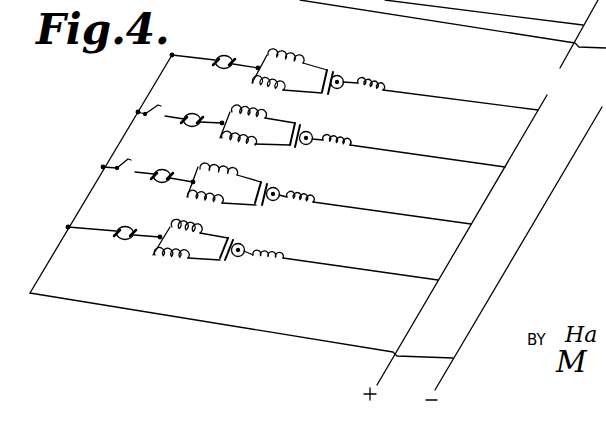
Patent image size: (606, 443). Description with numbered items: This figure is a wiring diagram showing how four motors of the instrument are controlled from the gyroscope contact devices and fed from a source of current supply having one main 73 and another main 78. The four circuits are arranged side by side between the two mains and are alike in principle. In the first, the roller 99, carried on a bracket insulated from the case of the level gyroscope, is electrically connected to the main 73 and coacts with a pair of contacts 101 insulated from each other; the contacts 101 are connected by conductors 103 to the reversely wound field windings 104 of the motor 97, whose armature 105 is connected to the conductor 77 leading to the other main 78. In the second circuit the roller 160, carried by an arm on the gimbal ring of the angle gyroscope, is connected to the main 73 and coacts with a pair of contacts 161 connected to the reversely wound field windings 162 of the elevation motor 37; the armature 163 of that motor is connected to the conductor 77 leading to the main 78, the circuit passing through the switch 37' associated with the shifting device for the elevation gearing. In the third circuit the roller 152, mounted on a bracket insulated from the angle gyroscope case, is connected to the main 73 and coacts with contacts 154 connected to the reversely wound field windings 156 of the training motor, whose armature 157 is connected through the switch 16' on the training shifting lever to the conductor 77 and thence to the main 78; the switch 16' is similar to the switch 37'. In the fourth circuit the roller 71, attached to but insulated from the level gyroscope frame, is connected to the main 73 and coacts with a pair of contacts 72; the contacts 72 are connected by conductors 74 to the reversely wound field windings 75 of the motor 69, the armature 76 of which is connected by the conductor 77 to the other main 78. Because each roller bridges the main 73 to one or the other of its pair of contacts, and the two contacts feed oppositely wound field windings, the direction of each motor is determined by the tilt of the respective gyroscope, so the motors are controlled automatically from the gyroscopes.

The armature 105 is at (227, 55).
The motor 97 is at (256, 63).
The conductors 103 is at (289, 74).
The field windings 104 is at (284, 52).
The contacts 101 is at (332, 71).
The roller 99 is at (345, 79).
The switch 37' is at (161, 97).
The armature 163 is at (193, 113).
The motor 37 is at (214, 105).
The field windings 162 is at (257, 125).
The contacts 161 is at (301, 125).
The roller 160 is at (313, 135).
The switch 16' is at (133, 153).
The armature 157 is at (165, 169).
The field windings 156 is at (224, 184).
The contacts 154 is at (268, 185).
The roller 152 is at (281, 192).
The armature 76 is at (119, 240).
The motor 69 is at (158, 234).
The field windings 75 is at (190, 243).
The conductors 74 is at (199, 235).
The contacts 72 is at (235, 241).
The roller 71 is at (247, 250).
The main 73 is at (490, 190).
The main 78 is at (531, 230).
The conductor 77 is at (188, 320).